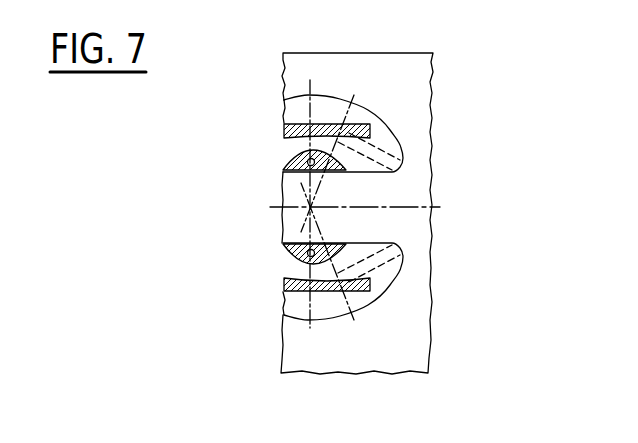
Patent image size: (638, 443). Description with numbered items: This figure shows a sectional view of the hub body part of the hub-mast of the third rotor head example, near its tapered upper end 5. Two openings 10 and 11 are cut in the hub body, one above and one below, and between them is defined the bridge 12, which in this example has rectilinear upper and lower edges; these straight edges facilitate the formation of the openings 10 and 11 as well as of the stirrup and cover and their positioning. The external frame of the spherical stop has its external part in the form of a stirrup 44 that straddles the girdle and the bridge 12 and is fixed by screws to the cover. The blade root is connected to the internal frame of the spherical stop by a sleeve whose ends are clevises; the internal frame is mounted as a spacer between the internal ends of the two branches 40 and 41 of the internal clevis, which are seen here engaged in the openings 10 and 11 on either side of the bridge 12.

The upper end 5 is at (449, 18).
The opening 10 is at (383, 279).
The opening 11 is at (383, 146).
The bridge 12 is at (383, 186).
The branch of the internal clevis 40 is at (327, 300).
The branch of the internal clevis 41 is at (323, 128).
The stirrup 44 is at (283, 247).